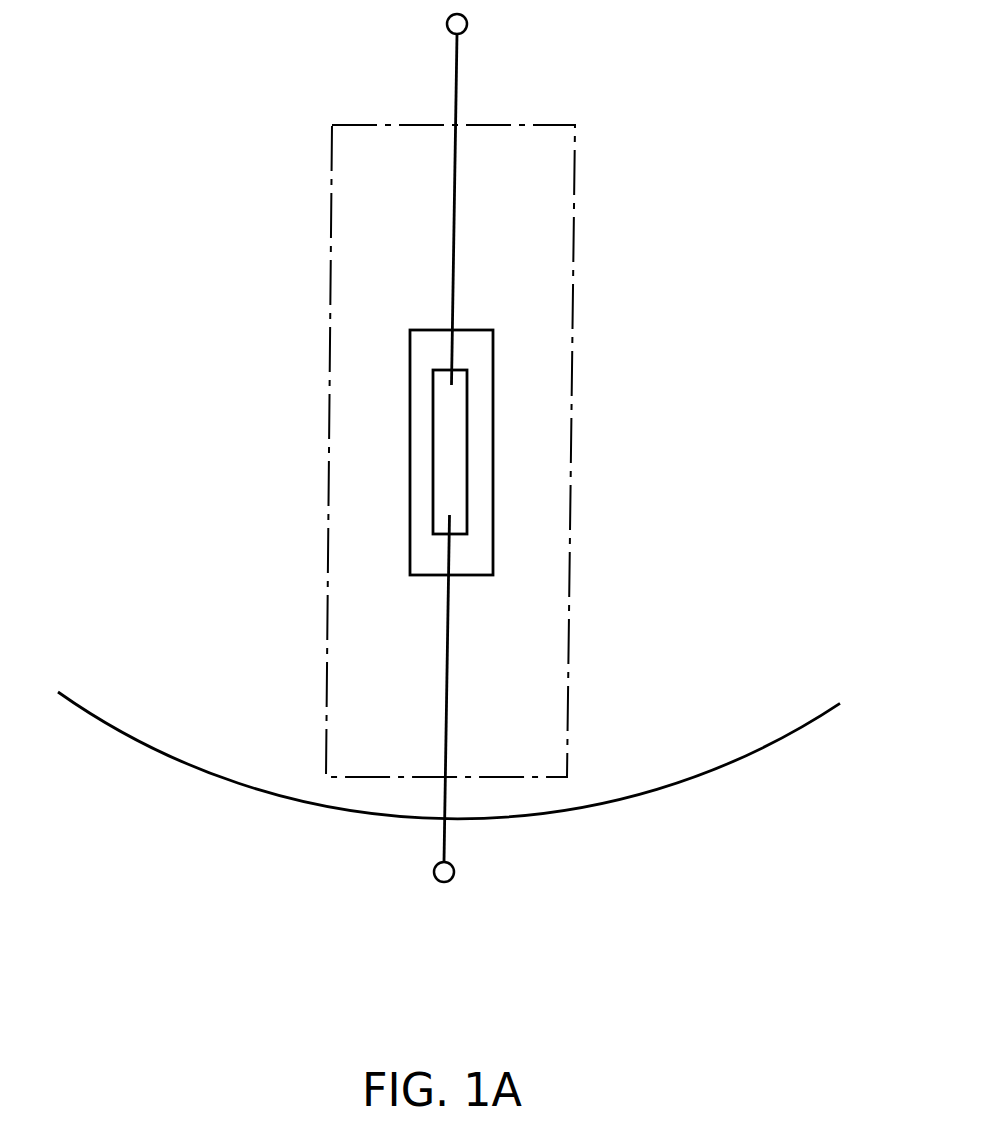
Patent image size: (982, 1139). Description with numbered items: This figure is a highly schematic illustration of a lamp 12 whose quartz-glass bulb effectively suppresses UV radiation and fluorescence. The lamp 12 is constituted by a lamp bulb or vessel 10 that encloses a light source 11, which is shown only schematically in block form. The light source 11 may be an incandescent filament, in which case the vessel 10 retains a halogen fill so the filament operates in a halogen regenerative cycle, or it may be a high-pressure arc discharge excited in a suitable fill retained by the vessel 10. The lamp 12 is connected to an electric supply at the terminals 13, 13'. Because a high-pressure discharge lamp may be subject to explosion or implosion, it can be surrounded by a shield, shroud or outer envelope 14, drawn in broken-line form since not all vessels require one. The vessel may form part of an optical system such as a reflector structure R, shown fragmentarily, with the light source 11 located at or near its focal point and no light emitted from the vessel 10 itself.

The lamp bulb or vessel 10 is at (493, 426).
The light source 11 is at (433, 417).
The lamp 12 is at (473, 328).
The terminal 13 is at (522, 25).
The terminal 13' is at (524, 869).
The shield, shroud or outer envelope 14 is at (590, 610).
The reflector structure R is at (673, 784).